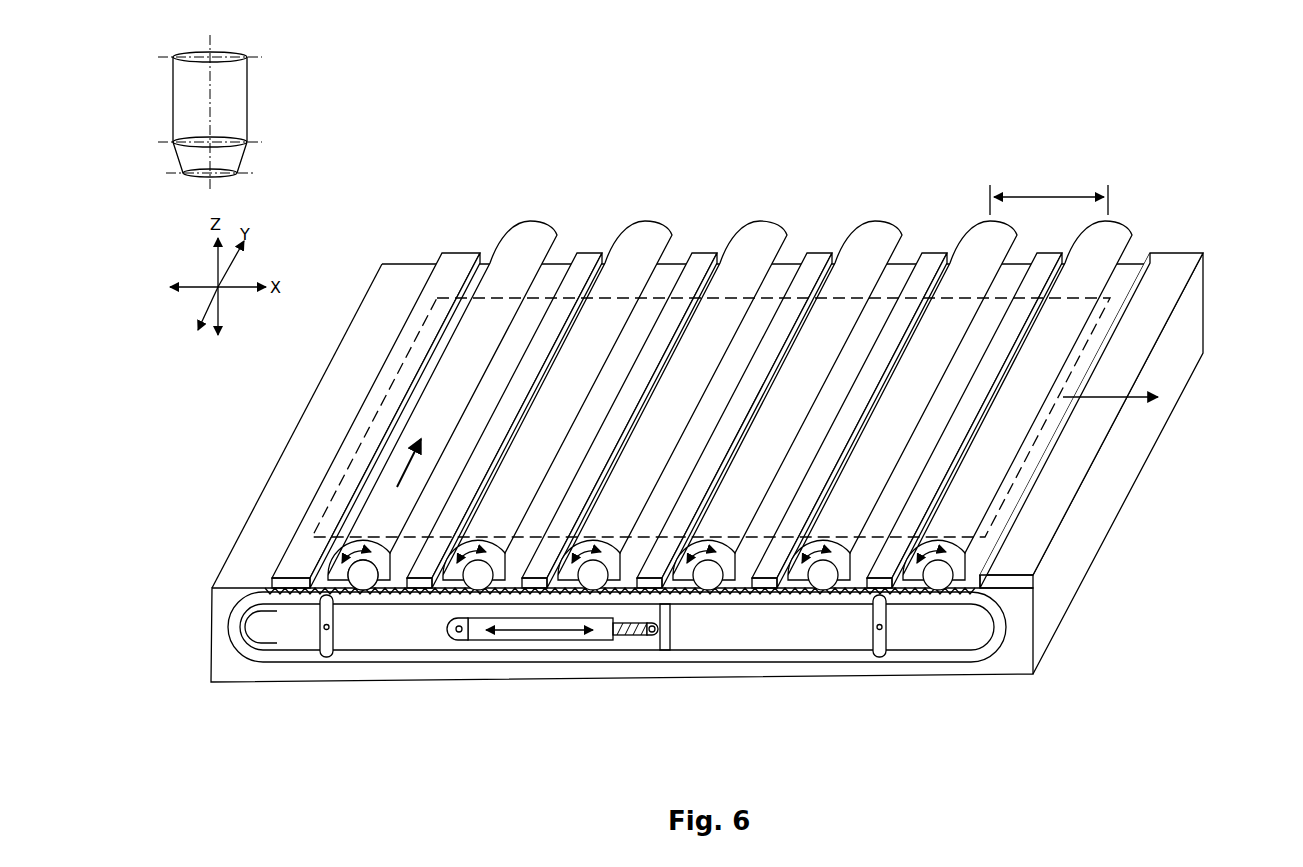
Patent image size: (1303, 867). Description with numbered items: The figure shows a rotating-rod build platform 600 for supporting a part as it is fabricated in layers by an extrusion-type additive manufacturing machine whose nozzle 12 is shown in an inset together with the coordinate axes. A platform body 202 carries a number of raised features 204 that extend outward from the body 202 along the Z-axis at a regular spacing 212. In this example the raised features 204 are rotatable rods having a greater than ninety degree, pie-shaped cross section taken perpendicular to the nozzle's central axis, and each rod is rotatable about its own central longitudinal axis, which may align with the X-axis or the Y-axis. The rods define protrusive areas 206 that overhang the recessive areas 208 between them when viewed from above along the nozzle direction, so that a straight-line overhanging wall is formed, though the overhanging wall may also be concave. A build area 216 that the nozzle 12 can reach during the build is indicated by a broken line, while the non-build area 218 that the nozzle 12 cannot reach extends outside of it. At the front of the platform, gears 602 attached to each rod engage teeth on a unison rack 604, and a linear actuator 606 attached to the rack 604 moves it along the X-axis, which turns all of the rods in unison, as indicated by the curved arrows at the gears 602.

The nozzle 12 is at (247, 100).
The rotating-rod build platform 600 is at (729, 416).
The platform body 202 is at (707, 490).
The raised features 204 is at (970, 495).
The protrusive areas 206 is at (523, 238).
The recessive areas 208 is at (582, 270).
The spacing 212 is at (1058, 190).
The build area 216 is at (397, 488).
The non-build area 218 is at (1095, 395).
The gears 602 is at (350, 573).
The unison rack 604 is at (763, 594).
The linear actuator 606 is at (529, 641).